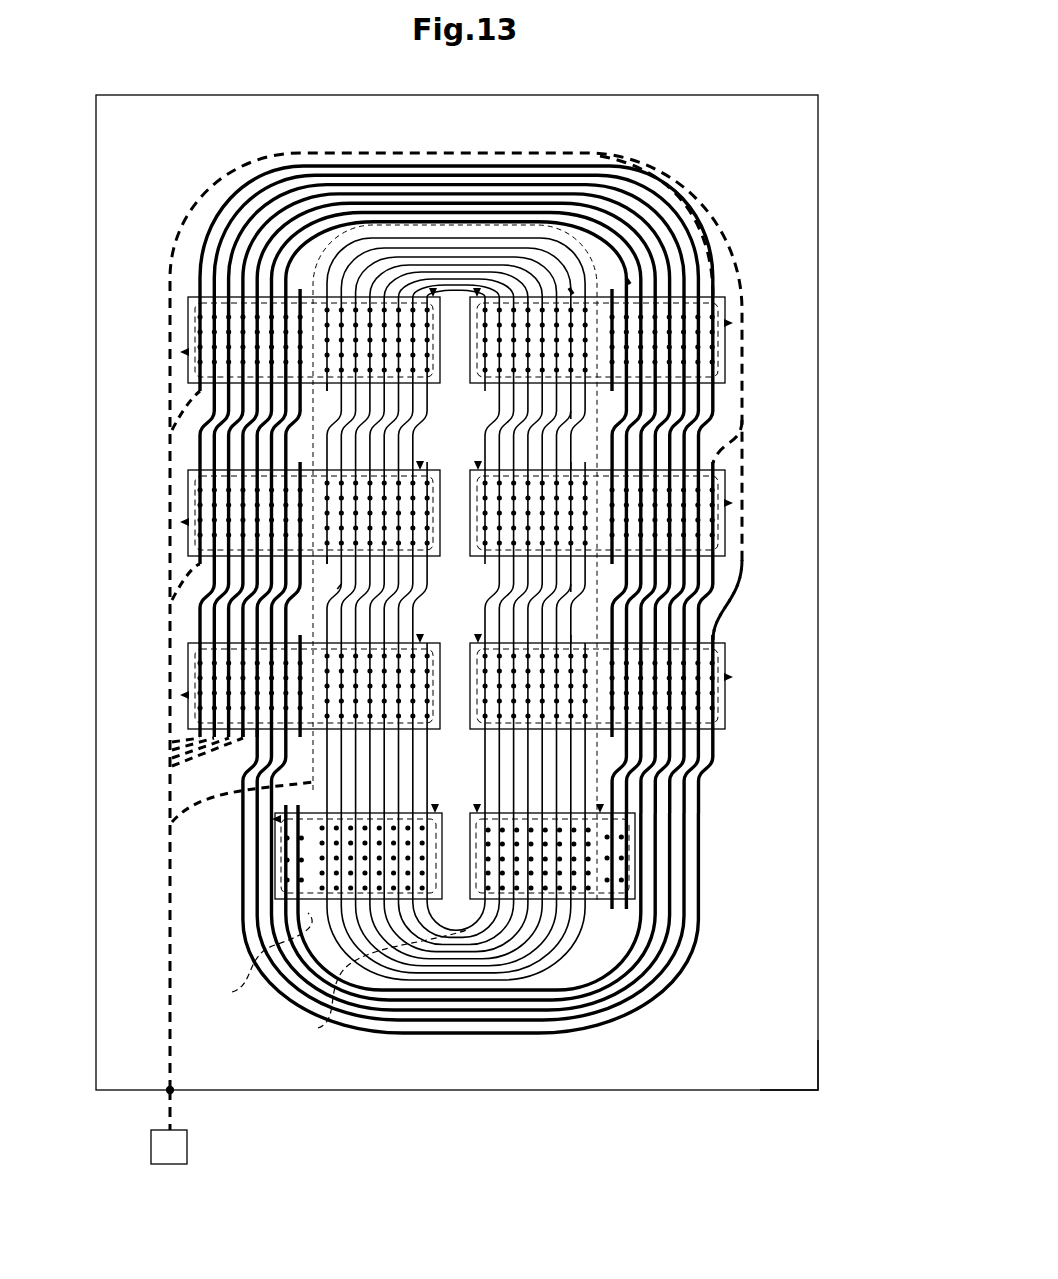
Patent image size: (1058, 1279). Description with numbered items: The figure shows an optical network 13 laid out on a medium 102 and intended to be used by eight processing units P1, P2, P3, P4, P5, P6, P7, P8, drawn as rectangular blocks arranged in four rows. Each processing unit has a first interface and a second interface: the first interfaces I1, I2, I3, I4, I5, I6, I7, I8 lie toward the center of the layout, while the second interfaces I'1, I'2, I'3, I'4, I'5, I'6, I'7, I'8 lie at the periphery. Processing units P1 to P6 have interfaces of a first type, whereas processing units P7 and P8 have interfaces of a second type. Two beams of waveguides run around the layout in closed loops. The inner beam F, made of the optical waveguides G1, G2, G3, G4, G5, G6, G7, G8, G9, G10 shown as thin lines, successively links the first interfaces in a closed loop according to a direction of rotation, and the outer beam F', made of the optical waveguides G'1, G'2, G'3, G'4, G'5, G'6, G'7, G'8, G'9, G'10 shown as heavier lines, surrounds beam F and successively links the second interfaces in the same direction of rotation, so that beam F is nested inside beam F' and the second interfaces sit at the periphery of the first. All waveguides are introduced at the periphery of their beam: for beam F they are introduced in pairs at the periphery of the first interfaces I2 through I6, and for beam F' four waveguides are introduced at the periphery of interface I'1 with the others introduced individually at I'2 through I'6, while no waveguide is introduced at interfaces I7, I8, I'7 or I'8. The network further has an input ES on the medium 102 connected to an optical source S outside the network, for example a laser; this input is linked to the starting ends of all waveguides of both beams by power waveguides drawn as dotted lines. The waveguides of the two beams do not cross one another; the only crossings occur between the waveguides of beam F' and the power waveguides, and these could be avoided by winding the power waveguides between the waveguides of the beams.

The optical network 13 is at (684, 90).
The medium 102 is at (785, 1065).
The processing unit P1 is at (188, 643).
The processing unit P2 is at (188, 470).
The processing unit P3 is at (188, 297).
The processing unit P4 is at (725, 297).
The processing unit P5 is at (723, 470).
The processing unit P6 is at (725, 643).
The processing unit P7 is at (600, 905).
The processing unit P8 is at (276, 813).
The first interface I1 is at (420, 636).
The first interface I2 is at (420, 463).
The first interface I3 is at (433, 290).
The first interface I4 is at (477, 290).
The first interface I5 is at (478, 463).
The first interface I6 is at (478, 636).
The first interface I7 is at (477, 806).
The first interface I8 is at (436, 806).
The second interface I'1 is at (147, 679).
The second interface I'2 is at (147, 509).
The second interface I'3 is at (147, 339).
The second interface I'4 is at (763, 334).
The second interface I'5 is at (761, 522).
The second interface I'6 is at (758, 696).
The second interface I'7 is at (672, 784).
The second interface I'8 is at (244, 861).
The optical waveguide G1 is at (338, 558).
The optical waveguide G2 is at (338, 568).
The optical waveguide G3 is at (323, 384).
The optical waveguide G4 is at (303, 387).
The optical waveguide G5 is at (630, 280).
The optical waveguide G6 is at (573, 290).
The optical waveguide G7 is at (570, 465).
The optical waveguide G8 is at (577, 425).
The optical waveguide G9 is at (570, 637).
The optical waveguide G10 is at (570, 620).
The optical waveguide G'1 is at (153, 717).
The optical waveguide G'2 is at (175, 747).
The optical waveguide G'3 is at (214, 802).
The optical waveguide G'4 is at (182, 788).
The optical waveguide G'5 is at (221, 801).
The optical waveguide G'6 is at (153, 569).
The optical waveguide G'7 is at (153, 398).
The optical waveguide G'8 is at (692, 226).
The optical waveguide G'9 is at (757, 450).
The optical waveguide G'10 is at (759, 607).
The beam F is at (379, 985).
The beam F' is at (256, 960).
The optical source S is at (169, 1127).
The input ES is at (175, 1088).